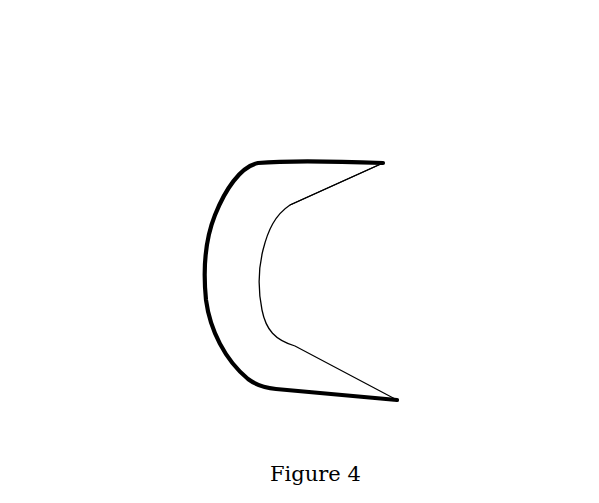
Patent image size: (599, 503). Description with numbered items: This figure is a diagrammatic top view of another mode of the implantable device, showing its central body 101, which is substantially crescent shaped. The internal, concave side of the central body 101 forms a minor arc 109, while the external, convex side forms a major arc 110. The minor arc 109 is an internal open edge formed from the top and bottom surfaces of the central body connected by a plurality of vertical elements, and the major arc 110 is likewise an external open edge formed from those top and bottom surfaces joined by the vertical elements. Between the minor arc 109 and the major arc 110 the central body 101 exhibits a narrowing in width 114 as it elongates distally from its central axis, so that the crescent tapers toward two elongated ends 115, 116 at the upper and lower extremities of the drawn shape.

The central body 101 is at (298, 212).
The major arc 110 is at (198, 268).
The minor arc 109 is at (275, 276).
The narrowing in width 114 is at (308, 186).
The elongated end 115 is at (407, 152).
The elongated end 116 is at (405, 376).